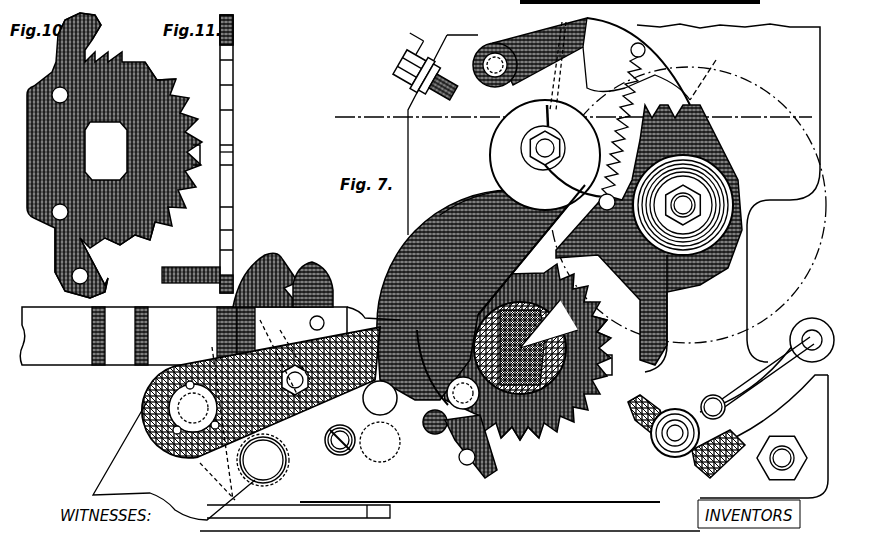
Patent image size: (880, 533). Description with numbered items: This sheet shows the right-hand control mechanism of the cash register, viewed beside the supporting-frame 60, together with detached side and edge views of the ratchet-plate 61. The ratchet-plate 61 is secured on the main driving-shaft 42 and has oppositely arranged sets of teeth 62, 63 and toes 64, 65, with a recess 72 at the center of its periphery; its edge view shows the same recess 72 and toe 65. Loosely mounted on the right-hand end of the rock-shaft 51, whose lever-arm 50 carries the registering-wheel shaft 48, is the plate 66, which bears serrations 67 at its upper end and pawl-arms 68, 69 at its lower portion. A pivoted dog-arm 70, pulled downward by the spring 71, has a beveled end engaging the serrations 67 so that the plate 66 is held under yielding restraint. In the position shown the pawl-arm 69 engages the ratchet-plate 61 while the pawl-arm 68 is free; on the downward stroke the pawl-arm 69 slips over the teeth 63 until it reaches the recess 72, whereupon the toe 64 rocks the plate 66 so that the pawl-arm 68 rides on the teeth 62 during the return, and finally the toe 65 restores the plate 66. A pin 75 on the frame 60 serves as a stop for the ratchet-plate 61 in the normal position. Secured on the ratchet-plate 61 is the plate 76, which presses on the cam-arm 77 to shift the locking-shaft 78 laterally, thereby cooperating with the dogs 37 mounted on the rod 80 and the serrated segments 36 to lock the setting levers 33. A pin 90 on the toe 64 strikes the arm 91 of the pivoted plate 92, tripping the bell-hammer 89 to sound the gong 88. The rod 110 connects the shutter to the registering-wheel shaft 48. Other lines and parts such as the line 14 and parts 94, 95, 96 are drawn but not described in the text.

In FIG. 7, the center line / axis 14 is at (562, 109).
In FIG. 7, the actuating or setting levers 33 is at (210, 336).
In FIG. 7, the serrated segments 36 is at (318, 265).
In FIG. 7, the dogs 37 is at (274, 254).
In FIG. 7, the main driving-shaft 42 is at (548, 365).
In FIG. 7, the registering-wheel shaft 48 is at (535, 150).
In FIG. 7, the lever-arm 50 is at (545, 155).
In FIG. 7, the rock-shaft 51 is at (686, 208).
In FIG. 7, the supporting-frame 60 is at (732, 261).
In FIG. 10, the ratchet-plate 61 is at (114, 155).
In FIG. 11, the ratchet-plate 61 is at (241, 154).
In FIG. 7, the ratchet-plate 61 is at (580, 420).
In FIG. 10, the ratchet-teeth 62 is at (146, 234).
In FIG. 7, the ratchet-teeth 62 is at (542, 440).
In FIG. 10, the ratchet-teeth 63 is at (169, 72).
In FIG. 7, the ratchet-teeth 63 is at (612, 326).
In FIG. 10, the toe 64 is at (104, 286).
In FIG. 7, the toe 64 is at (476, 444).
In FIG. 10, the toe 65 is at (102, 25).
In FIG. 11, the toe 65 is at (241, 29).
In FIG. 7, the toe 65 is at (462, 197).
In FIG. 7, the plate 66 is at (726, 160).
In FIG. 7, the serrations or teeth 67 is at (714, 71).
In FIG. 7, the pawl-arm 68 is at (652, 356).
In FIG. 7, the pawl-arm 69 is at (546, 240).
In FIG. 7, the dog-arm 70 is at (648, 48).
In FIG. 7, the spring 71 is at (620, 106).
In FIG. 10, the recess 72 is at (206, 155).
In FIG. 11, the recess 72 is at (236, 152).
In FIG. 7, the recess 72 is at (618, 365).
In FIG. 7, the pin 75 is at (432, 436).
In FIG. 7, the plate 76 is at (425, 230).
In FIG. 7, the cam-arm 77 is at (160, 437).
In FIG. 7, the locking-shaft 78 is at (190, 408).
In FIG. 7, the rod 80 is at (268, 470).
In FIG. 7, the gong or alarm 88 is at (778, 310).
In FIG. 7, the bell-hammer 89 is at (800, 341).
In FIG. 10, the pin 90 is at (72, 280).
In FIG. 11, the pin 90 is at (200, 267).
In FIG. 7, the pin 90 is at (466, 466).
In FIG. 7, the arm 91 is at (636, 422).
In FIG. 7, the pivoted plate 92 is at (682, 458).
In FIG. 7, the lever 94 is at (773, 412).
In FIG. 7, the link 95 is at (755, 385).
In FIG. 7, the stop 96 is at (660, 452).
In FIG. 7, the rod 110 is at (562, 22).